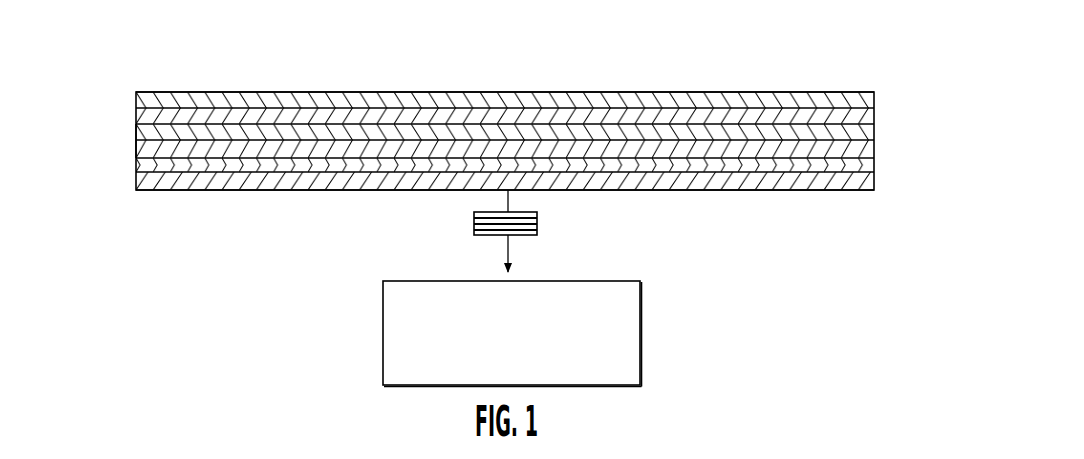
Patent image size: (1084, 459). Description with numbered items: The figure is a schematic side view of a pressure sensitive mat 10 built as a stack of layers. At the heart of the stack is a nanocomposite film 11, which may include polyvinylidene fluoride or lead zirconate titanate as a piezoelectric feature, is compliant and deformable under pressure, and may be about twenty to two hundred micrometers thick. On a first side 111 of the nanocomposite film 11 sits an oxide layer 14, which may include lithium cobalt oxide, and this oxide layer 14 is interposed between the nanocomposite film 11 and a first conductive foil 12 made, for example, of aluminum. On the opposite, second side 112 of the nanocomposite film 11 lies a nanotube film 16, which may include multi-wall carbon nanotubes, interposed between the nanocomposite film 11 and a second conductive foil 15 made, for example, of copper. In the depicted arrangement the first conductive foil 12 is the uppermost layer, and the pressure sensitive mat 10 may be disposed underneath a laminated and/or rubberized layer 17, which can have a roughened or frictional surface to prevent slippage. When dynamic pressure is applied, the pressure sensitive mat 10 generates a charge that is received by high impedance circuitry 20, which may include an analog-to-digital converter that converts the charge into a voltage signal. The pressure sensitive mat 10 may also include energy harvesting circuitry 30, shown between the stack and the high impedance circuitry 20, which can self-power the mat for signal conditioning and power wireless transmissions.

The pressure sensitive mat 10 is at (143, 82).
The nanocomposite film 11 is at (137, 155).
The first conductive foil 12 is at (238, 104).
The oxide layer 14 is at (136, 147).
The second conductive foil 15 is at (234, 180).
The nanotube film 16 is at (138, 165).
The laminated and/or rubberized layer 17 is at (467, 100).
The high impedance circuitry 20 is at (372, 336).
The energy harvesting circuitry 30 is at (459, 232).
The first side 111 is at (874, 137).
The second side 112 is at (872, 158).